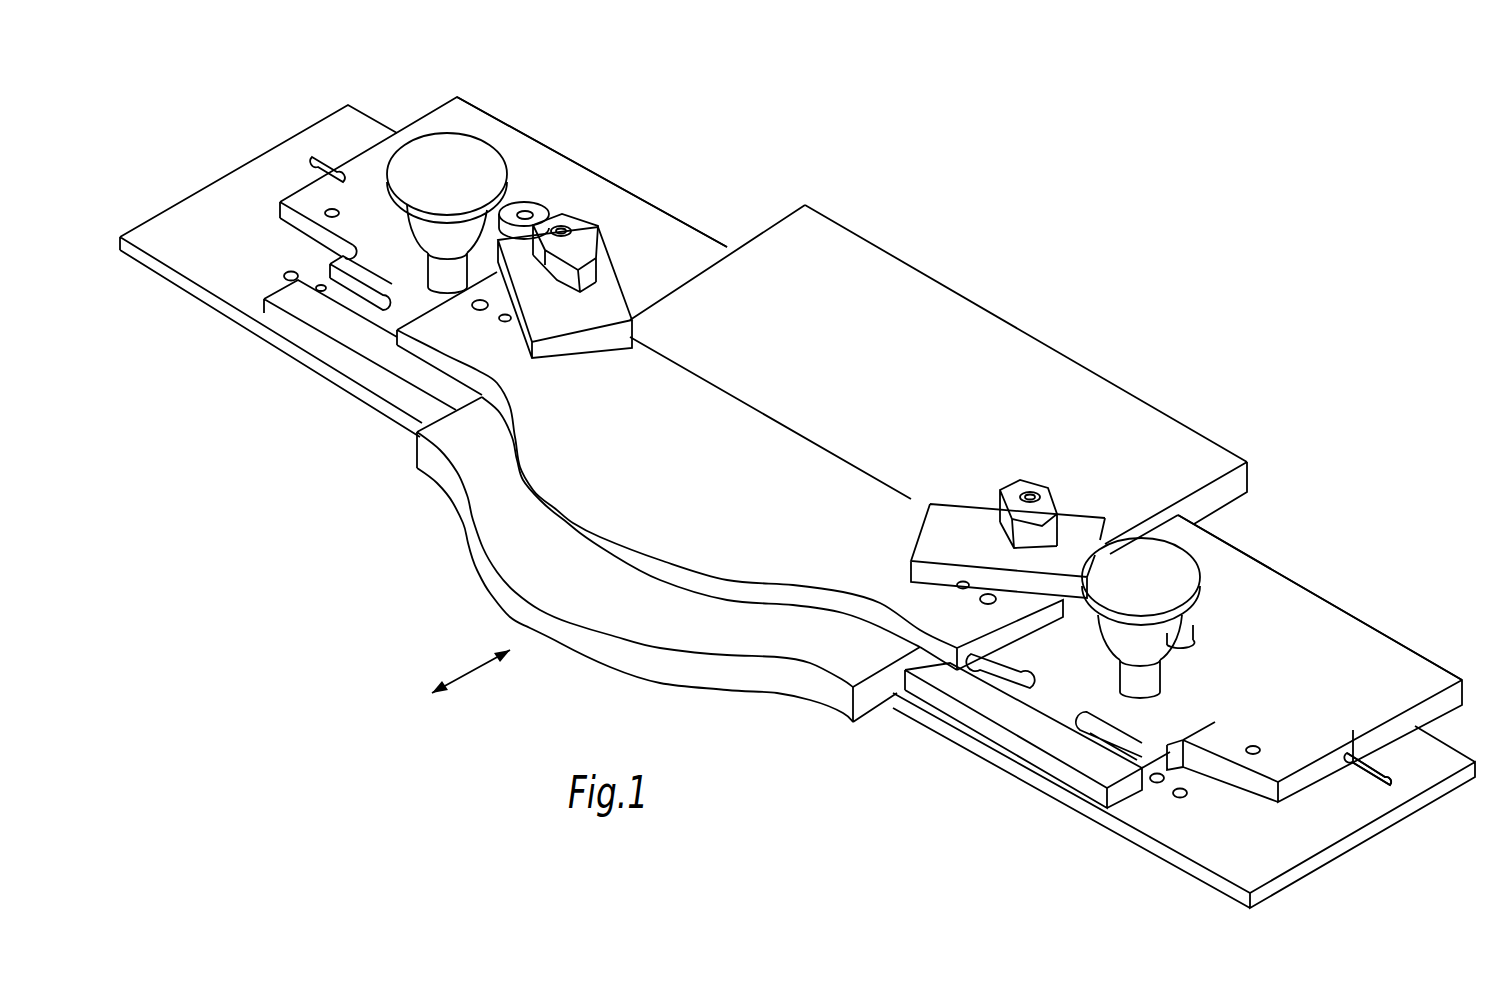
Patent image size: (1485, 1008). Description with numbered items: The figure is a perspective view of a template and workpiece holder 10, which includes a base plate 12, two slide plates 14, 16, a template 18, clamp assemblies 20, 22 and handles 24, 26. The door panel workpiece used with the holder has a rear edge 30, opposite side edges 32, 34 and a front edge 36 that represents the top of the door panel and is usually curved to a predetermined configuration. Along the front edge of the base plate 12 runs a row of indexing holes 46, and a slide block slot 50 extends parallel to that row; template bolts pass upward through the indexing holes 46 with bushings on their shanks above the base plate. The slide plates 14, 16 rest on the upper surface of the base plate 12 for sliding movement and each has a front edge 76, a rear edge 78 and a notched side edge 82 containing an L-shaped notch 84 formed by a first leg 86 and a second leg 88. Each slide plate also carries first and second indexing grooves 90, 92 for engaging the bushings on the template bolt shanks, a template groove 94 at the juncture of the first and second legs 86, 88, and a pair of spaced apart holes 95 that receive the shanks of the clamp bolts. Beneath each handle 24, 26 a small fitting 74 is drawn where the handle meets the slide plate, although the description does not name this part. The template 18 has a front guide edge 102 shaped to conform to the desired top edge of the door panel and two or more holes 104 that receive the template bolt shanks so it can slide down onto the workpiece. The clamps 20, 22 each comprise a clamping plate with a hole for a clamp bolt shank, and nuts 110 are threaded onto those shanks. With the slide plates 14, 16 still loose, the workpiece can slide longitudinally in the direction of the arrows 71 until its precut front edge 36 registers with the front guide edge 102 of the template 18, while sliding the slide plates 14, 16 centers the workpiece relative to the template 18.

The template and workpiece holder 10 is at (772, 157).
The base plate 12 is at (1425, 805).
The slide plate 14 is at (1358, 608).
The slide plate 16 is at (628, 186).
The template 18 is at (764, 412).
The clamp assembly 20 is at (960, 500).
The clamp assembly 22 is at (637, 333).
The handle 24 is at (445, 148).
The handle 26 is at (1160, 555).
The rear edge 30 is at (968, 292).
The side edge 32 is at (417, 434).
The side edge 34 is at (870, 690).
The front edge 36 is at (540, 617).
The indexing holes 46 is at (321, 285).
The slide block slot 50 is at (340, 160).
The arrows 71 is at (440, 690).
The nut 74 is at (530, 213).
The front edge 76 is at (330, 345).
The rear edge 78 is at (520, 128).
The notched side edge 82 is at (425, 118).
The L-shaped notch 84 is at (1253, 790).
The first leg 86 is at (297, 222).
The second leg 88 is at (267, 290).
The first indexing groove 90 is at (1018, 672).
The second indexing groove 92 is at (390, 298).
The template groove 94 is at (355, 247).
The holes 95 is at (332, 209).
The front guide edge 102 is at (586, 540).
The holes 104 is at (480, 312).
The nuts 110 is at (595, 255).